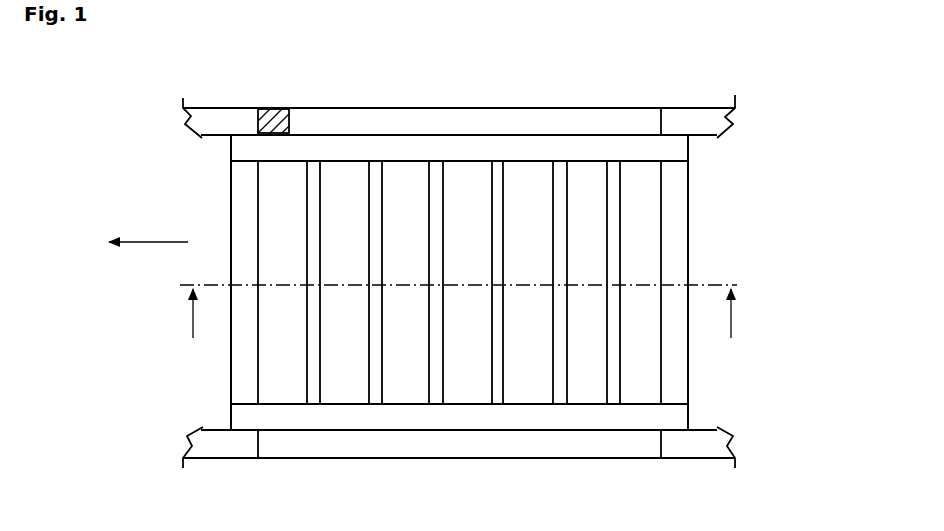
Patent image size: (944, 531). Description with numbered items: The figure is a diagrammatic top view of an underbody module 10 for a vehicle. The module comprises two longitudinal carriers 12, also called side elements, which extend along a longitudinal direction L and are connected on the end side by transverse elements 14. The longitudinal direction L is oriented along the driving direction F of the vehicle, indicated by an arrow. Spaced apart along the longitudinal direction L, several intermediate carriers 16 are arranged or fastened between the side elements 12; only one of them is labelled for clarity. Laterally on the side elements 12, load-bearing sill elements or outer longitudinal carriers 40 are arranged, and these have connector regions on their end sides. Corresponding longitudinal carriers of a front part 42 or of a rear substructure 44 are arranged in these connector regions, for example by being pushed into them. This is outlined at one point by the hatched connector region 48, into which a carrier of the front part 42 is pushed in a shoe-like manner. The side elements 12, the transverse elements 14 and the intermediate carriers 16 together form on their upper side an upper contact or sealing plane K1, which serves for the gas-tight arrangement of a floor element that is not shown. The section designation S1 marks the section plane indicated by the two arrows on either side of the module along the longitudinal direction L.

The underbody module 10 is at (126, 144).
The longitudinal carrier 12 is at (375, 145).
The transverse element 14 is at (672, 225).
The intermediate carrier 16 is at (615, 359).
The outer longitudinal carrier 40 is at (530, 118).
The front part 42 is at (228, 118).
The rear substructure 44 is at (698, 118).
The connector region 48 is at (280, 90).
The sealing plane K1 is at (682, 180).
The longitudinal direction L is at (697, 285).
The driving direction F is at (173, 242).
The section plane S1 is at (461, 315).